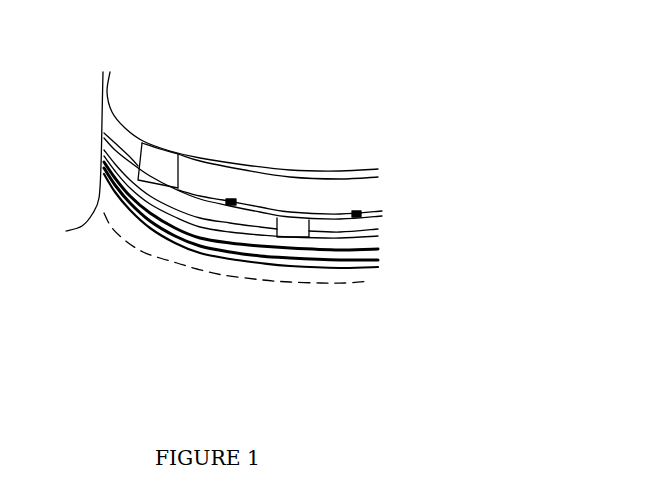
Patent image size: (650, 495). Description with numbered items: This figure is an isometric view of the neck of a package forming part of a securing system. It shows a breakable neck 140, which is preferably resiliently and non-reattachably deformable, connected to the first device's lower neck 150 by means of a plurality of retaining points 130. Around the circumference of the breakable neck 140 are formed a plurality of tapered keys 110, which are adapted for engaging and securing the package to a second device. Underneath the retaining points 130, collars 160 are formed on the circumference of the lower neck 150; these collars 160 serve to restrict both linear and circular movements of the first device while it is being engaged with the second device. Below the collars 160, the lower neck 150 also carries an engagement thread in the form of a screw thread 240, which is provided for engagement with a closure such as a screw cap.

The tapered key 110 is at (157, 163).
The retaining point 130 is at (348, 194).
The breakable neck 140 is at (377, 201).
The lower neck 150 is at (166, 259).
The collar 160 is at (280, 237).
The screw thread 240 is at (363, 258).